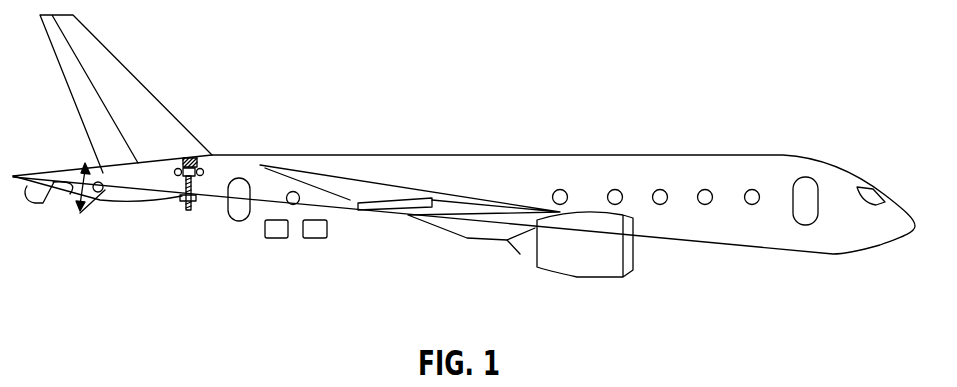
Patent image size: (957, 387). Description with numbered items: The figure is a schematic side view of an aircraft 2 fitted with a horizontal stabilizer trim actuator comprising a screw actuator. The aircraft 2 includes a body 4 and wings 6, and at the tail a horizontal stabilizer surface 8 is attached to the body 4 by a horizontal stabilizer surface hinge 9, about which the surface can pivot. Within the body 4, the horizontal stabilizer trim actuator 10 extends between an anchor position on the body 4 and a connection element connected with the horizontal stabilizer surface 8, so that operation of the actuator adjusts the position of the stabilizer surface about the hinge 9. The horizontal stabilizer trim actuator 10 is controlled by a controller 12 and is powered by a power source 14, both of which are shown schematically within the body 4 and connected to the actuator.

The aircraft 2 is at (527, 134).
The body 4 is at (467, 256).
The wings 6 is at (375, 193).
The horizontal stabilizer surface 8 is at (33, 203).
The horizontal stabilizer surface hinge 9 is at (82, 212).
The horizontal stabilizer trim actuator 10 is at (197, 158).
The controller 12 is at (275, 238).
The power source 14 is at (316, 238).